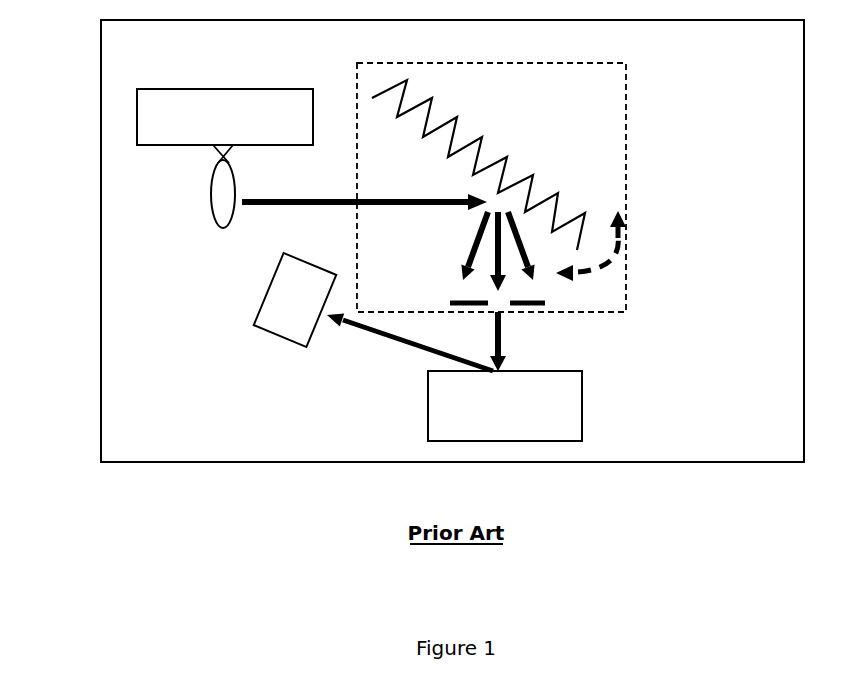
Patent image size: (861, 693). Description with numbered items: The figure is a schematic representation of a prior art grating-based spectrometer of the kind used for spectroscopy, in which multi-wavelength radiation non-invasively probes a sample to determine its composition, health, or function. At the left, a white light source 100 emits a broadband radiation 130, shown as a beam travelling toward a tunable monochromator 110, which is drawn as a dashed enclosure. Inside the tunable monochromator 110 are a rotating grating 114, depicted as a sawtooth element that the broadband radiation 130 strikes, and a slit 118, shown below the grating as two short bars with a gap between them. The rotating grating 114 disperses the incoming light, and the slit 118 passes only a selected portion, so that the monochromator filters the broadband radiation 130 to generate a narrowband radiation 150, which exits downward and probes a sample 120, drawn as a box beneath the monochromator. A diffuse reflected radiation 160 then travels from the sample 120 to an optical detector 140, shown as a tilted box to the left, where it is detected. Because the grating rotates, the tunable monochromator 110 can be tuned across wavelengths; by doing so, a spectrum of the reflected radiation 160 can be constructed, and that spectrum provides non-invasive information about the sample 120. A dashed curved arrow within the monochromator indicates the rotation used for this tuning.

The white light source 100 is at (207, 215).
The tunable monochromator 110 is at (626, 95).
The rotating grating 114 is at (500, 163).
The slit 118 is at (545, 303).
The sample 120 is at (505, 406).
The broadband radiation 130 is at (364, 192).
The optical detector 140 is at (295, 300).
The narrowband radiation 150 is at (514, 341).
The diffuse reflected radiation 160 is at (410, 342).